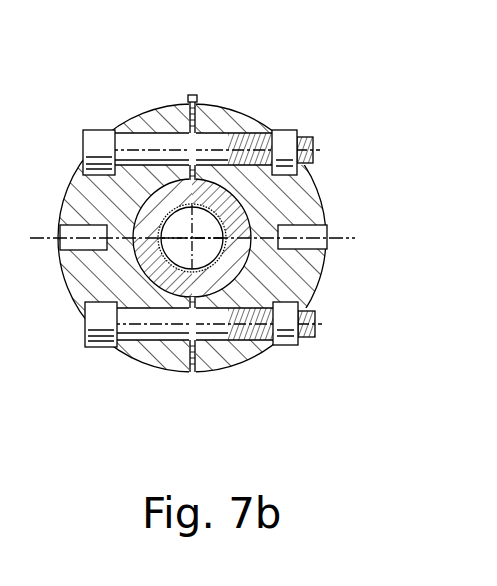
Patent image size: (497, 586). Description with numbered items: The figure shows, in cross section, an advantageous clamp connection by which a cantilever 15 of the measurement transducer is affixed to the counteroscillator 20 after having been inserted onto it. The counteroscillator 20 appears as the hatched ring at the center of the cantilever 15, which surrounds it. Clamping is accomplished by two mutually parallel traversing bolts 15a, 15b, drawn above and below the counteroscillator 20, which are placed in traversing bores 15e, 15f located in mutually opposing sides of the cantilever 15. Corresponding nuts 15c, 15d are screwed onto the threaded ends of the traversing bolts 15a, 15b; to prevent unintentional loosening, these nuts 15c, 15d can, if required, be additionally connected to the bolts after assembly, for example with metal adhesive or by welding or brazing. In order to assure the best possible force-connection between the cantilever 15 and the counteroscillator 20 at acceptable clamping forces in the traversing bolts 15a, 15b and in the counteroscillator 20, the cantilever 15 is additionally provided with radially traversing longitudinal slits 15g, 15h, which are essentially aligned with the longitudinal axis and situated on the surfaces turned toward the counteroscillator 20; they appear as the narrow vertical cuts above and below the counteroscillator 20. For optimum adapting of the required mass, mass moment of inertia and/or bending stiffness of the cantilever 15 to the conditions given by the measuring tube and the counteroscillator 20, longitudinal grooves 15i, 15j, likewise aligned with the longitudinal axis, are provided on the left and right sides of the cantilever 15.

The cantilever 15 is at (158, 101).
The traversing bolt 15a is at (102, 142).
The traversing bolt 15b is at (100, 345).
The nut 15c is at (290, 345).
The nut 15d is at (285, 138).
The traversing bore 15e is at (177, 133).
The traversing bore 15f is at (167, 341).
The longitudinal slit 15g is at (194, 372).
The longitudinal slit 15h is at (193, 98).
The longitudinal groove 15i is at (67, 253).
The longitudinal groove 15j is at (323, 258).
The counteroscillator 20 is at (150, 213).